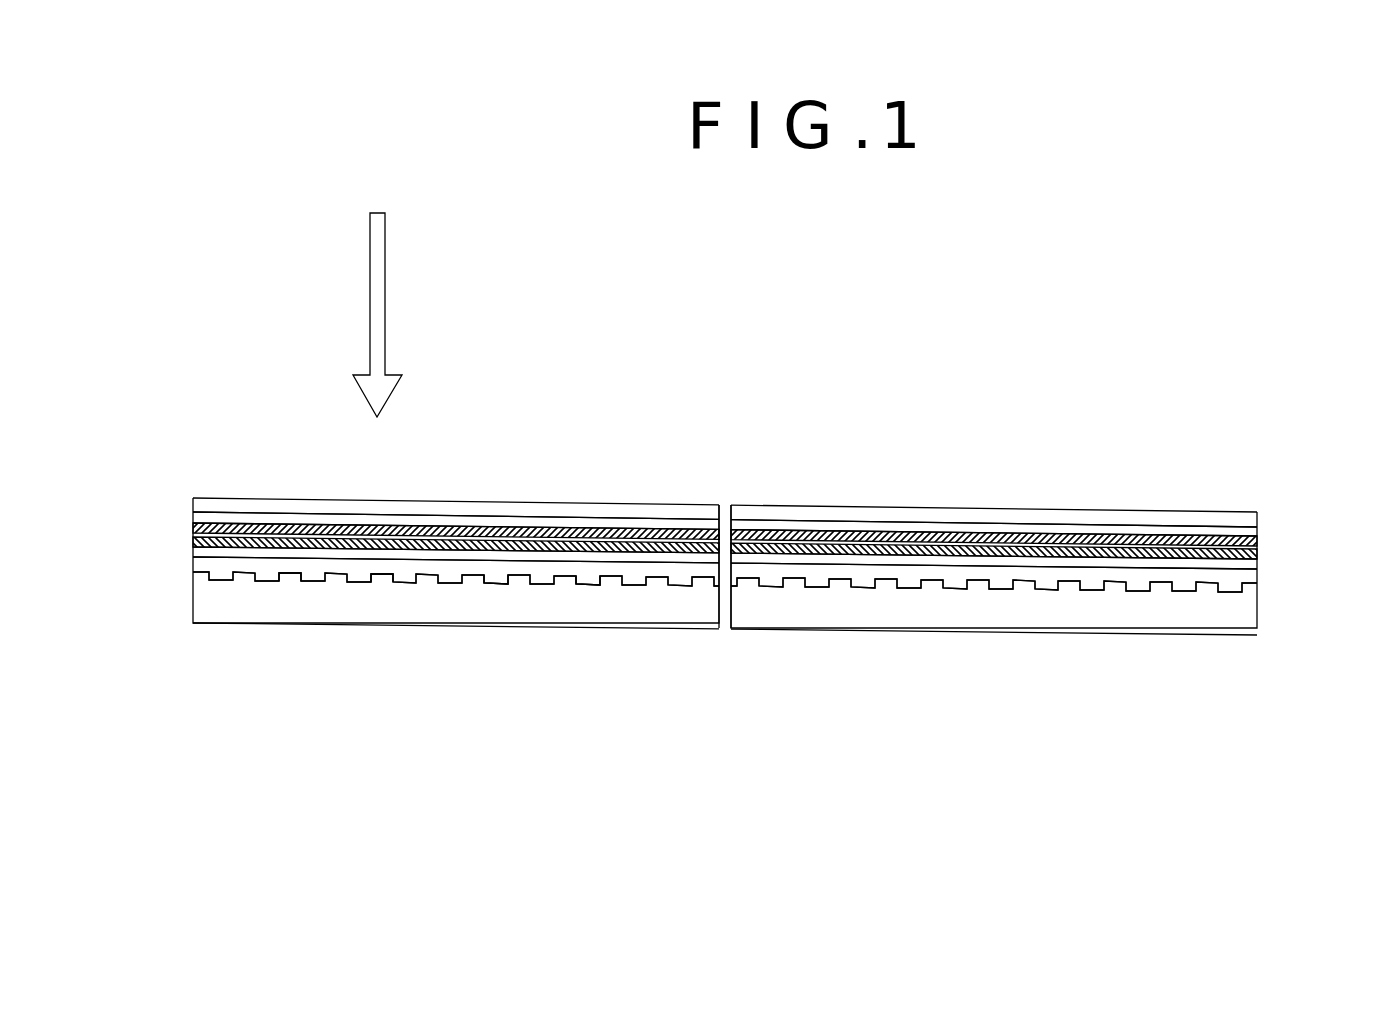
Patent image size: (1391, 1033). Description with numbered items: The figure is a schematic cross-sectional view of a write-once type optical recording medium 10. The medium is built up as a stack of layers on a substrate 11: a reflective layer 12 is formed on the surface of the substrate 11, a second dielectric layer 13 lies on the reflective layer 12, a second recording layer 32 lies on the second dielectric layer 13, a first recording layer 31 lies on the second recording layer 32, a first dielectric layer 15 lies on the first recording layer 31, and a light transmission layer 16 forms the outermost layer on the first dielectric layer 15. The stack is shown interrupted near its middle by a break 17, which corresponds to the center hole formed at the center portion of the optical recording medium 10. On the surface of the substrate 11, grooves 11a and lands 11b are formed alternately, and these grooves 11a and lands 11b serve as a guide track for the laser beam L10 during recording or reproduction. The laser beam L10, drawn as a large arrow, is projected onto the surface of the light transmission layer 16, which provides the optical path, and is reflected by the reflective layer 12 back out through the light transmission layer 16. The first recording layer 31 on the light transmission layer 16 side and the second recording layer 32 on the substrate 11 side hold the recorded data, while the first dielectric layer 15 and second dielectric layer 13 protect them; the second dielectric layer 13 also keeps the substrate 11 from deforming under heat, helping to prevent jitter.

The optical recording medium 10 is at (1055, 443).
The substrate 11 is at (1205, 625).
The grooves 11a is at (380, 575).
The lands 11b is at (590, 583).
The reflective layer 12 is at (1257, 578).
The second dielectric layer 13 is at (1257, 565).
The first dielectric layer 15 is at (1257, 533).
The light transmission layer 16 is at (1257, 515).
The gap 17 is at (724, 638).
The first recording layer 31 is at (194, 528).
The second recording layer 32 is at (194, 542).
The laser beam L10 is at (385, 303).